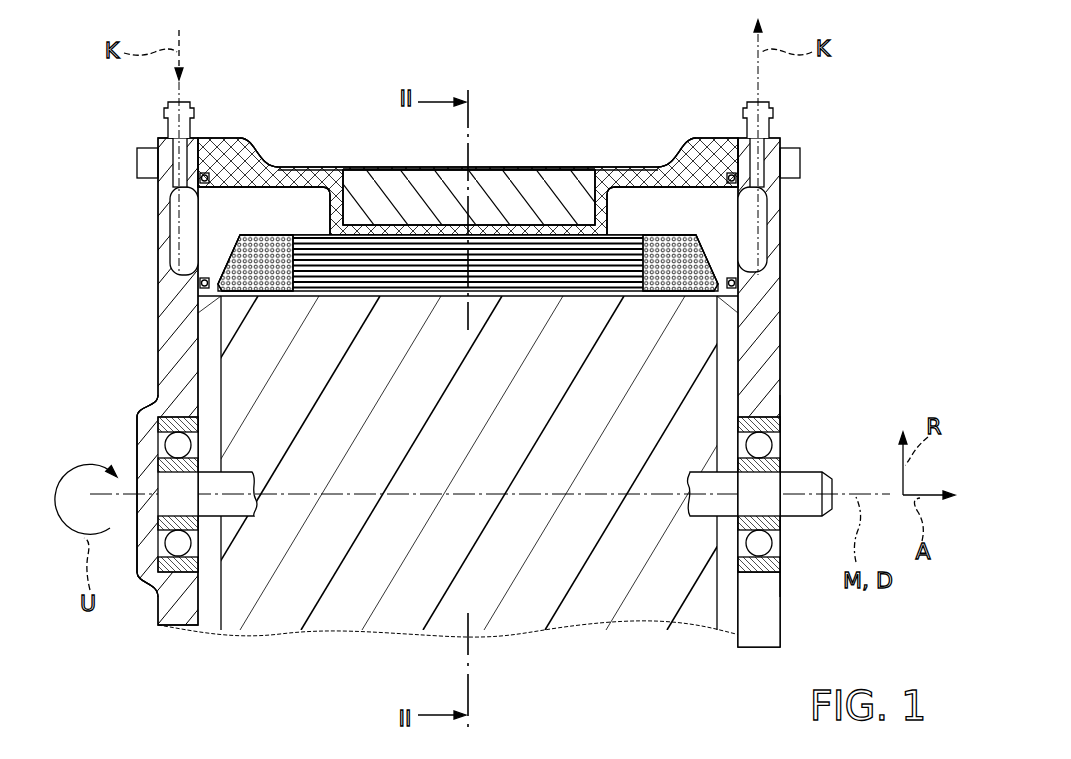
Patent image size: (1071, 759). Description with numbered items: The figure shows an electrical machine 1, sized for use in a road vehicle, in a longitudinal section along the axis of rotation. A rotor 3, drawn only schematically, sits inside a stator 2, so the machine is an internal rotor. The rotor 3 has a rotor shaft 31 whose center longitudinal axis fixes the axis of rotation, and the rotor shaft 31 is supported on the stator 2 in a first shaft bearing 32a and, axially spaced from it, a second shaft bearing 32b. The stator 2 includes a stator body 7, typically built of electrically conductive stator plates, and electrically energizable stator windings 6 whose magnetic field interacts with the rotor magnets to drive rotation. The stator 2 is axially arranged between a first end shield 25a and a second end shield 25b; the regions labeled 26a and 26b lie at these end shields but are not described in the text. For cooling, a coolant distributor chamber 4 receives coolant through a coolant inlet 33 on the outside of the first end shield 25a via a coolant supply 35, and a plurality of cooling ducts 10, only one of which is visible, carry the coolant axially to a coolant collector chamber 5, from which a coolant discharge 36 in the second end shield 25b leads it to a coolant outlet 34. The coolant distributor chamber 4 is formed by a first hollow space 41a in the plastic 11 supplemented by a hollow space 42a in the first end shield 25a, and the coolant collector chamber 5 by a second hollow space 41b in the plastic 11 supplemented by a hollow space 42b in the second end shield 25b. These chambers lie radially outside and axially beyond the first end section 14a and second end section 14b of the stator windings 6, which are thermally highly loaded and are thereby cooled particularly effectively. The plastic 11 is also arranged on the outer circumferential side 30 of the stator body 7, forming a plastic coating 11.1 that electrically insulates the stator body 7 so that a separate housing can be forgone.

The electrical machine 1 is at (897, 128).
The stator 2 is at (589, 160).
The rotor 3 is at (450, 455).
The coolant distributor chamber 4 is at (218, 225).
The coolant collector chamber 5 is at (702, 230).
The stator windings 6 is at (292, 222).
The stator body 7 is at (510, 160).
The cooling ducts 10 is at (350, 297).
The plastic 11 is at (636, 157).
The plastic coating 11.1 is at (547, 167).
The first end section 14a is at (208, 256).
The second end section 14b is at (740, 251).
The first end shield 25a is at (150, 320).
The second end shield 25b is at (790, 317).
The first bearing seat 26a is at (158, 385).
The second bearing seat 26b is at (781, 378).
The outer circumferential side 30 is at (377, 166).
The rotor shaft 31 is at (803, 503).
The first shaft bearing 32a is at (158, 422).
The second shaft bearing 32b is at (781, 425).
The coolant inlet 33 is at (168, 113).
The coolant outlet 34 is at (770, 112).
The coolant supply 35 is at (160, 150).
The coolant discharge 36 is at (800, 162).
The first hollow space 41a is at (268, 208).
The second hollow space 41b is at (690, 203).
The hollow space in first end shield 42a is at (185, 225).
The hollow space in second end shield 42b is at (753, 225).